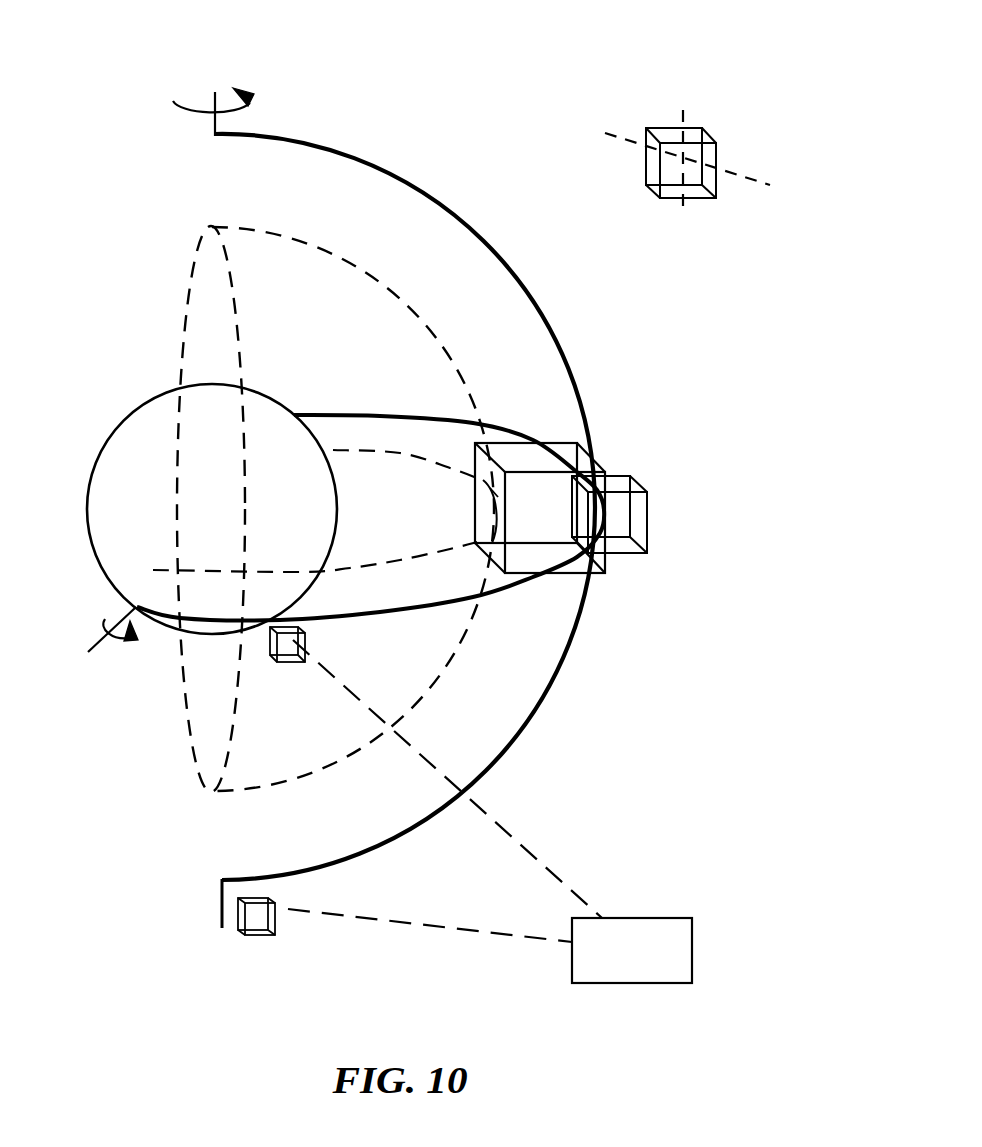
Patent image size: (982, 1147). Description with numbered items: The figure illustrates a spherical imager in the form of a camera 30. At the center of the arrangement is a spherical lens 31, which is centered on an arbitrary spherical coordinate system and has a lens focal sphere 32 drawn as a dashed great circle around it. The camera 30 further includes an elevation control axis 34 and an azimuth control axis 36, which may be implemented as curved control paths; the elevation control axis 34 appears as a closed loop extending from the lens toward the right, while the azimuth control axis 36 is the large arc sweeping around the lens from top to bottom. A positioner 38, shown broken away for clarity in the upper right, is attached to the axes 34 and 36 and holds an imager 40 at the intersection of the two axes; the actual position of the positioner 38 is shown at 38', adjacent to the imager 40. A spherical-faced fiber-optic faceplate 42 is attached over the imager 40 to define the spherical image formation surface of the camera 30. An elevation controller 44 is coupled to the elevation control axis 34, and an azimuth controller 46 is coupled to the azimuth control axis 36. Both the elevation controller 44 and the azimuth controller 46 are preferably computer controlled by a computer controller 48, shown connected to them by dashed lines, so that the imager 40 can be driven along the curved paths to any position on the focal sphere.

The camera 30 is at (531, 57).
The spherical lens 31 is at (125, 453).
The lens focal sphere 32 is at (356, 267).
The elevation control axis 34 is at (510, 590).
The azimuth control axis 36 is at (537, 298).
The positioner 38 is at (685, 174).
The actual position of positioner 38' is at (636, 514).
The imager 40 is at (548, 443).
The spherical-faced fiber-optic faceplate 42 is at (477, 479).
The elevation controller 44 is at (290, 665).
The azimuth controller 46 is at (258, 937).
The computer controller 48 is at (622, 985).